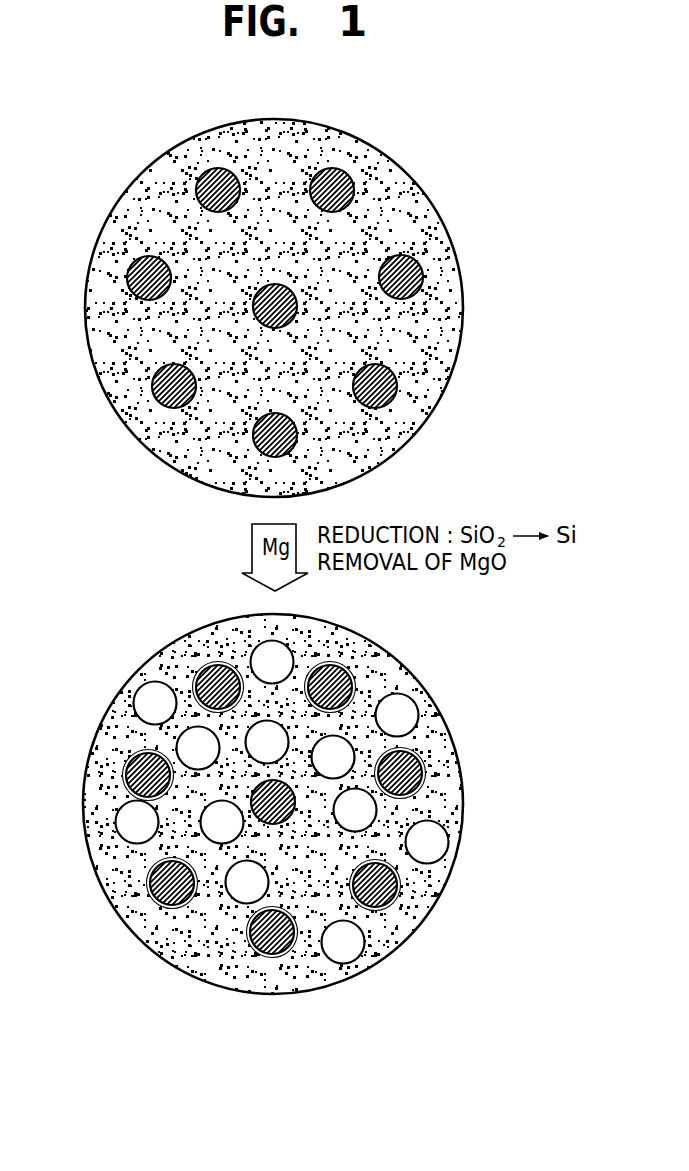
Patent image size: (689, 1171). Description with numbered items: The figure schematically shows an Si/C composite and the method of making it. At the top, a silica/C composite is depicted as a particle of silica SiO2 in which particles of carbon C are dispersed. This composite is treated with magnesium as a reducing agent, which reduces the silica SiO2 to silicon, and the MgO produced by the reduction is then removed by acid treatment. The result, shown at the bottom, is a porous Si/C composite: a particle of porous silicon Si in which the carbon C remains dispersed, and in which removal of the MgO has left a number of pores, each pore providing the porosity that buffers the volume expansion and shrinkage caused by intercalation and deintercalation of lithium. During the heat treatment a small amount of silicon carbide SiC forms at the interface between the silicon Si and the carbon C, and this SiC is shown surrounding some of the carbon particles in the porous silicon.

The silica SiO2 is at (413, 210).
The carbon C is at (408, 277).
The porous silicon Si is at (442, 752).
The element pore is at (138, 688).
The silicon carbide SiC is at (150, 883).